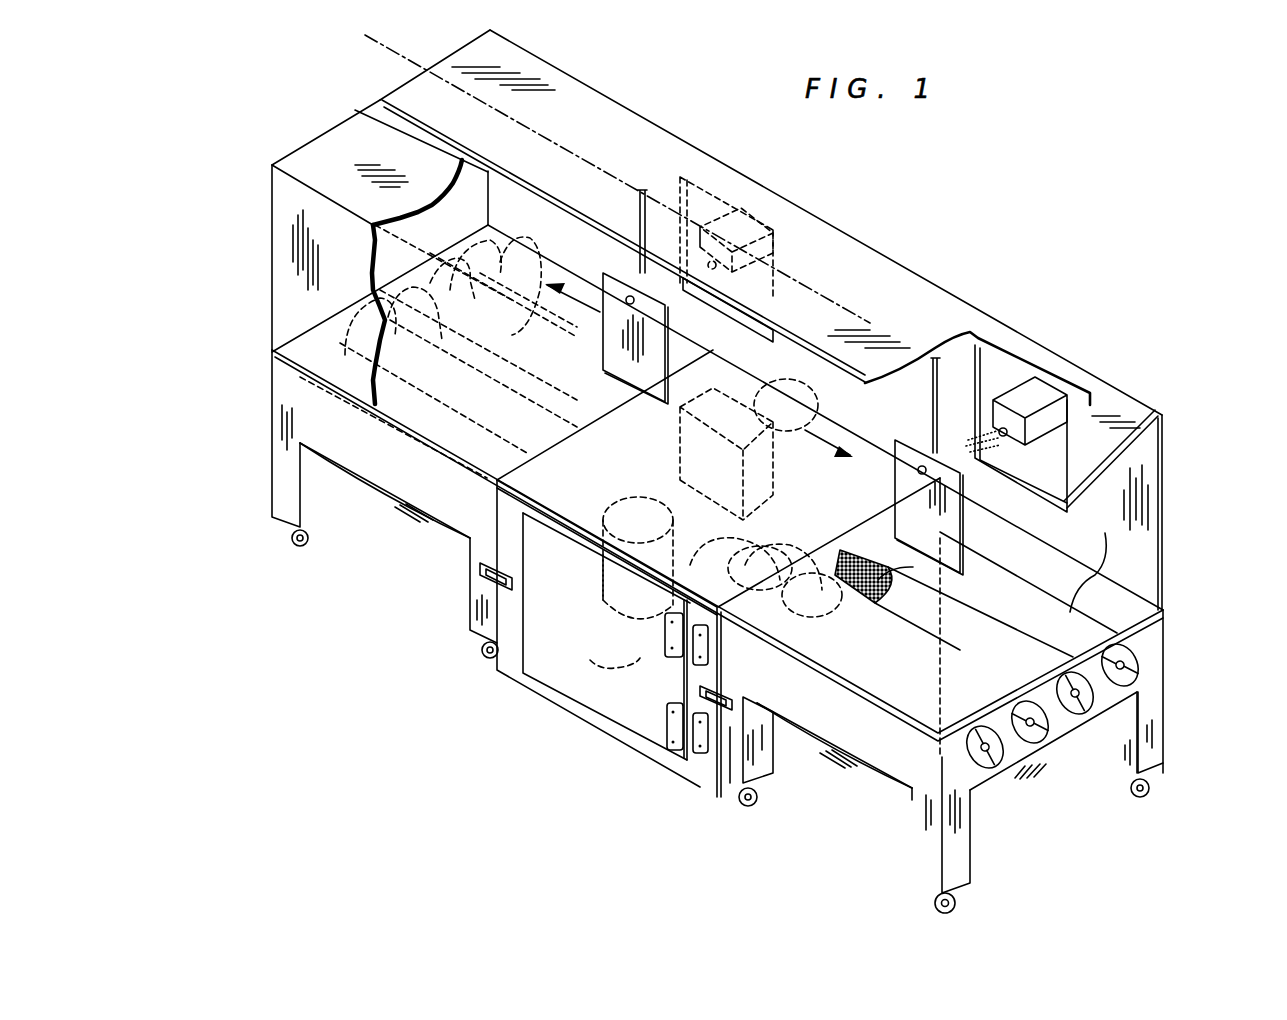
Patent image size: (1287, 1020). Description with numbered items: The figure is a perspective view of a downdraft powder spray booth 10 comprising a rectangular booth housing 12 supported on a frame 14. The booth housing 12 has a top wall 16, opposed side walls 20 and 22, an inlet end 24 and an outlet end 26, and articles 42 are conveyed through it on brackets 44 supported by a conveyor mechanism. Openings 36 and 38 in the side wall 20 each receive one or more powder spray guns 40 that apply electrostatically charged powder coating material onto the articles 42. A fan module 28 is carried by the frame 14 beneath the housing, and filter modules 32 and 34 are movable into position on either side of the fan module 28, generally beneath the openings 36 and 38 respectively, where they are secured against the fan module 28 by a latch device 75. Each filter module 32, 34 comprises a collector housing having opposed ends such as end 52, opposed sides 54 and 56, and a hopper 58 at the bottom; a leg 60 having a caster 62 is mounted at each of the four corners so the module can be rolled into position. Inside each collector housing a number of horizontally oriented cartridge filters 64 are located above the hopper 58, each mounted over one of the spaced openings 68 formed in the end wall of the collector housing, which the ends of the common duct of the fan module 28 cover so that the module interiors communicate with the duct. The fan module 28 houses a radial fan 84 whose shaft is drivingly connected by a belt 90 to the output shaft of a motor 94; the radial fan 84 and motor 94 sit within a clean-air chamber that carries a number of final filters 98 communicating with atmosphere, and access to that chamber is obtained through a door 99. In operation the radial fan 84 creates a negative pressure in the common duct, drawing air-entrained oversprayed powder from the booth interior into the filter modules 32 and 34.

The downdraft powder spray booth 10 is at (984, 168).
The booth housing 12 is at (1185, 458).
The frame 14 is at (272, 352).
The top wall 16 is at (592, 112).
The side wall 20 is at (285, 232).
The side wall 22 is at (1168, 422).
The inlet end 24 is at (1140, 542).
The outlet end 26 is at (382, 100).
The fan module 28 is at (522, 707).
The filter module 32 is at (425, 553).
The filter module 34 is at (935, 855).
The opening 36 is at (705, 157).
The opening 38 is at (995, 345).
The powder spray gun 40 is at (747, 177).
The article 42 is at (900, 440).
The bracket 44 is at (640, 200).
The end 52 is at (1138, 704).
The side 54 is at (905, 760).
The side 56 is at (1167, 645).
The hopper 58 is at (385, 535).
The leg 60 is at (272, 478).
The caster 62 is at (300, 546).
The cartridge filter 64 is at (522, 250).
The spaced opening 68 is at (685, 495).
The latch device 75 is at (512, 578).
The radial fan 84 is at (735, 500).
The belt 90 is at (600, 665).
The motor 94 is at (600, 600).
The final filter 98 is at (755, 388).
The door 99 is at (630, 708).